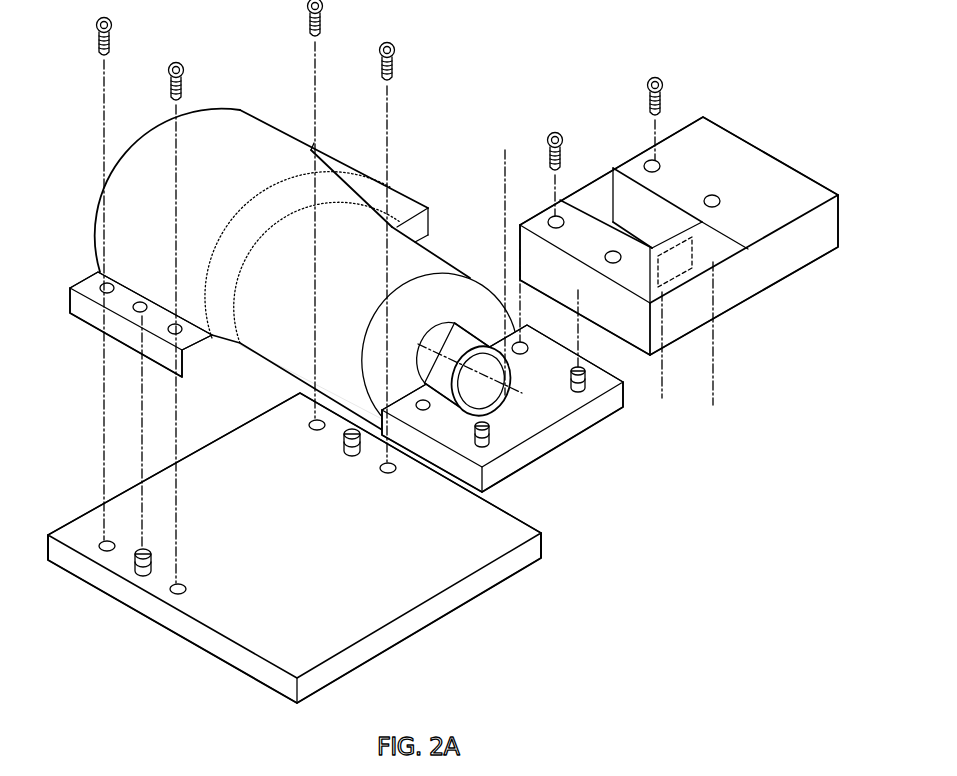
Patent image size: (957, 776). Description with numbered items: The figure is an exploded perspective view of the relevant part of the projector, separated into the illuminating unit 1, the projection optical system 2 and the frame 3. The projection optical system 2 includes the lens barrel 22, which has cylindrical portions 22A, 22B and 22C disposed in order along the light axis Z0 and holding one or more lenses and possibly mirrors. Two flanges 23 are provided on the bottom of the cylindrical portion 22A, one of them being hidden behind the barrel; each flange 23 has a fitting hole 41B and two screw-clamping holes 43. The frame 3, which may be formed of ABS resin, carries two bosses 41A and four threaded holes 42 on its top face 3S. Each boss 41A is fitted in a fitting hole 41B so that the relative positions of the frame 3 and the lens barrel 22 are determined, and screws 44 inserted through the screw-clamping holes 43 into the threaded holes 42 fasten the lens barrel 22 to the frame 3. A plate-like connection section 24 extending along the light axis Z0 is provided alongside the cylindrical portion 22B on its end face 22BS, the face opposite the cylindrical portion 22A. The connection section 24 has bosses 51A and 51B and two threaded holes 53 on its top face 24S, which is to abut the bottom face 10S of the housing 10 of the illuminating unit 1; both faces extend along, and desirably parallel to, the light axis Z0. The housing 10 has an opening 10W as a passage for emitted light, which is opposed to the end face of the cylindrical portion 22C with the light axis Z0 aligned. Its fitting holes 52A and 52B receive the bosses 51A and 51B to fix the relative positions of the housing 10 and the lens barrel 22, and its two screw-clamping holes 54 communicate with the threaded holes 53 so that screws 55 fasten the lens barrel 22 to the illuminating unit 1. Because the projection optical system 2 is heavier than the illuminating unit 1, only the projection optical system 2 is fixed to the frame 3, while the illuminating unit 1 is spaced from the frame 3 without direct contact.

The illuminating unit 1 is at (745, 100).
The projection optical system 2 is at (430, 100).
The frame 3 is at (436, 660).
The top face 3S is at (460, 568).
The housing 10 is at (676, 277).
The bottom face 10S is at (783, 258).
The opening 10W is at (708, 272).
The lens barrel 22 is at (289, 265).
The cylindrical portion 22A is at (240, 118).
The cylindrical portion 22B is at (440, 258).
The end face 22BS is at (394, 376).
The cylindrical portion 22C is at (462, 452).
The flange 23 is at (149, 332).
The connection section 24 is at (529, 431).
The top face 24S is at (612, 415).
The boss 41A is at (140, 576).
The fitting hole 41B is at (105, 318).
The threaded hole 42 is at (105, 552).
The screw-clamping hole 43 is at (100, 283).
The screw 44 is at (113, 26).
The boss 51A is at (432, 410).
The boss 51B is at (528, 355).
The fitting hole 52A is at (620, 262).
The fitting hole 52B is at (722, 204).
The threaded hole 53 is at (484, 447).
The screw-clamping hole 54 is at (548, 220).
The screw 55 is at (562, 133).
The light axis Z0 is at (508, 150).